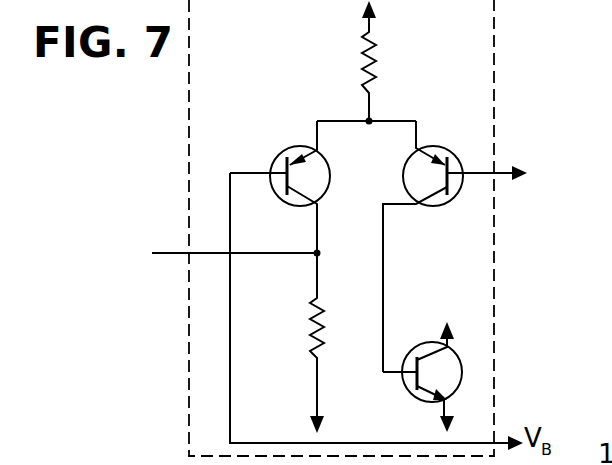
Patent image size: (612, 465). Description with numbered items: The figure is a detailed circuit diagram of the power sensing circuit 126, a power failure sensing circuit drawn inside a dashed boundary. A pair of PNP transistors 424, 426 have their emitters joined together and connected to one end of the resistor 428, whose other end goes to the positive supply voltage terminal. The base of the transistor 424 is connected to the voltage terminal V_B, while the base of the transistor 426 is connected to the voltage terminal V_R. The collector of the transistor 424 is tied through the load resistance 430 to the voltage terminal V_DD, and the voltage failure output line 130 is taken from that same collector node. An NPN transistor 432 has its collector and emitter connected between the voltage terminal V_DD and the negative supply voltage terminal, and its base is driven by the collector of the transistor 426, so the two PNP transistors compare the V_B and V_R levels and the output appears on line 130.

The power sensing circuit 126 is at (496, 88).
The resistor 428 is at (372, 42).
The PNP transistor 424 is at (270, 205).
The PNP transistor 426 is at (436, 202).
The voltage failure output line 130 is at (170, 255).
The load resistance 430 is at (312, 302).
The NPN transistor 432 is at (404, 377).